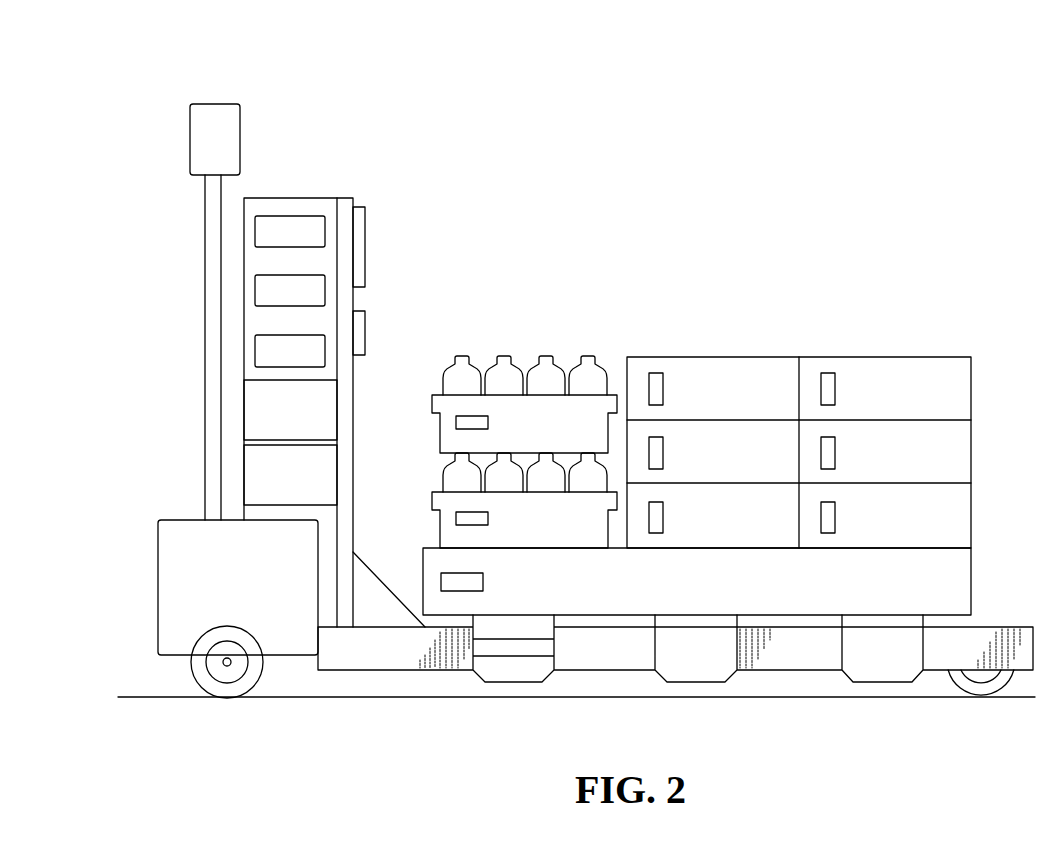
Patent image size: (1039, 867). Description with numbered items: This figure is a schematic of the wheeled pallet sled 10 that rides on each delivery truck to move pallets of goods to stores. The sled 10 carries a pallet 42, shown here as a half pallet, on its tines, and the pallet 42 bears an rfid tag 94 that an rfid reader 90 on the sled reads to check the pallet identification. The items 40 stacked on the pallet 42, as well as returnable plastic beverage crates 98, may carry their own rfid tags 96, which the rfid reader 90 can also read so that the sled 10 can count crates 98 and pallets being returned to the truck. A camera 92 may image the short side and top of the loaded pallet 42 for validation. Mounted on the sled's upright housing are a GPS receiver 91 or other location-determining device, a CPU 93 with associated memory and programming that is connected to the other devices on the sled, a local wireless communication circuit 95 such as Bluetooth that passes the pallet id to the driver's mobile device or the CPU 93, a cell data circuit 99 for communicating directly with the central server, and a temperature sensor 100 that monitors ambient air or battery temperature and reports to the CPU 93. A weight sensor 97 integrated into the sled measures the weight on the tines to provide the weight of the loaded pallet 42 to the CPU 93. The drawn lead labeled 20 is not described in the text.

The pallet sled 10 is at (752, 98).
The container 20 is at (440, 437).
The items 40 is at (972, 392).
The pallet 42 is at (972, 583).
The rfid reader 90 is at (365, 245).
The GPS receiver 91 is at (255, 232).
The camera 92 is at (365, 333).
The CPU 93 is at (255, 291).
The rfid tag 94 is at (483, 582).
The local wireless communication circuit 95 is at (255, 351).
The rfid tags 96 is at (663, 390).
The weight sensor 97 is at (515, 657).
The plastic beverage crates 98 is at (440, 530).
The cell data circuit 99 is at (244, 413).
The temperature sensor 100 is at (244, 476).